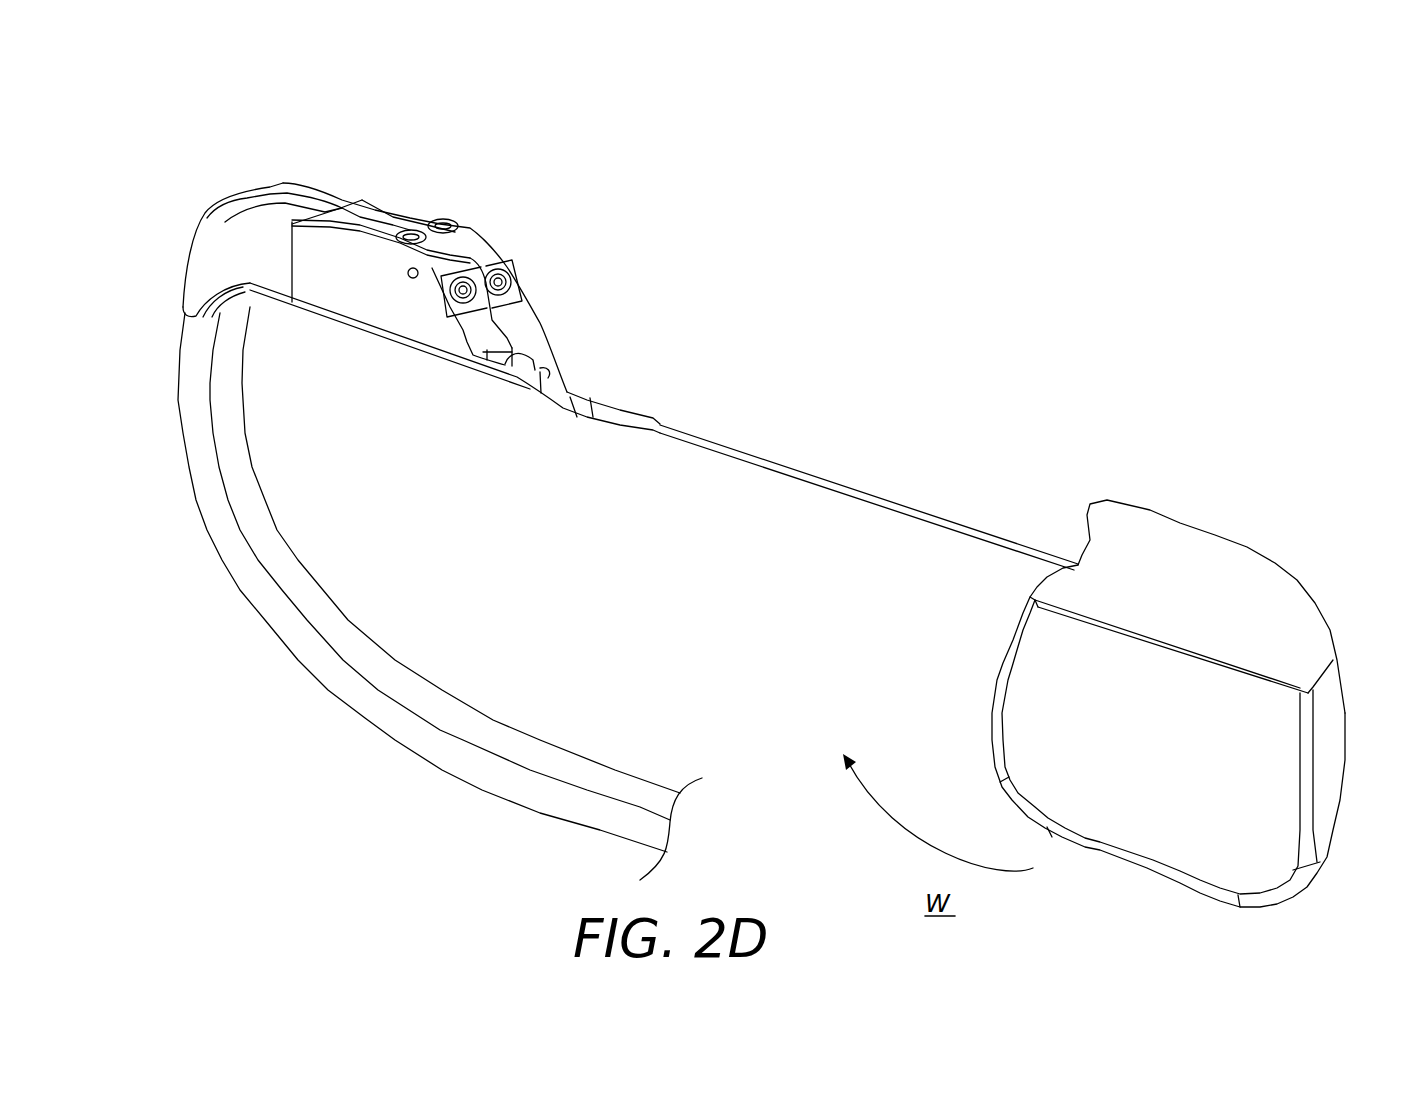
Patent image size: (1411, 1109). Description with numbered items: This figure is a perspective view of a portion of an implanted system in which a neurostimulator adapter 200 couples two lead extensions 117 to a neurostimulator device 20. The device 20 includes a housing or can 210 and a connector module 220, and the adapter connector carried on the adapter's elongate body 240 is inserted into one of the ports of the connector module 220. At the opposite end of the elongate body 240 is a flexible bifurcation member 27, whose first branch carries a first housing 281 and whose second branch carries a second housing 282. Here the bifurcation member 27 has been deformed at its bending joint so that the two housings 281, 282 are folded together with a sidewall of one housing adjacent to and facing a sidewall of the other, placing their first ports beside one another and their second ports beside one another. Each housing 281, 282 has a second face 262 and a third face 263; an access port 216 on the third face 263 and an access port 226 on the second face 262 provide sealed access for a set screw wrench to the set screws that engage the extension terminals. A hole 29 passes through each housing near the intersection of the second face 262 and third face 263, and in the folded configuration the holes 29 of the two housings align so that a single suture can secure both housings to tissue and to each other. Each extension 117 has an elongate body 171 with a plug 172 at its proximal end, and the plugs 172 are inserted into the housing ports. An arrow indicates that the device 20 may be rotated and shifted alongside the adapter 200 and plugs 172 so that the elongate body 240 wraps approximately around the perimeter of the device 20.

The lead extension 117 is at (250, 173).
The plug 172 is at (308, 192).
The neurostimulator adapter 200 is at (570, 262).
The second housing 282 is at (482, 215).
The third face 263 is at (411, 228).
The access port 216 is at (448, 218).
The hole 29 is at (410, 280).
The access port 226 is at (492, 272).
The second face 262 is at (514, 297).
The first housing 281 is at (302, 287).
The flexible bifurcation member 27 is at (594, 420).
The elongate body 171 is at (270, 552).
The elongate body 240 is at (790, 473).
The neurostimulator device 20 is at (1345, 563).
The connector module 220 is at (1200, 562).
The housing or can 210 is at (1183, 880).